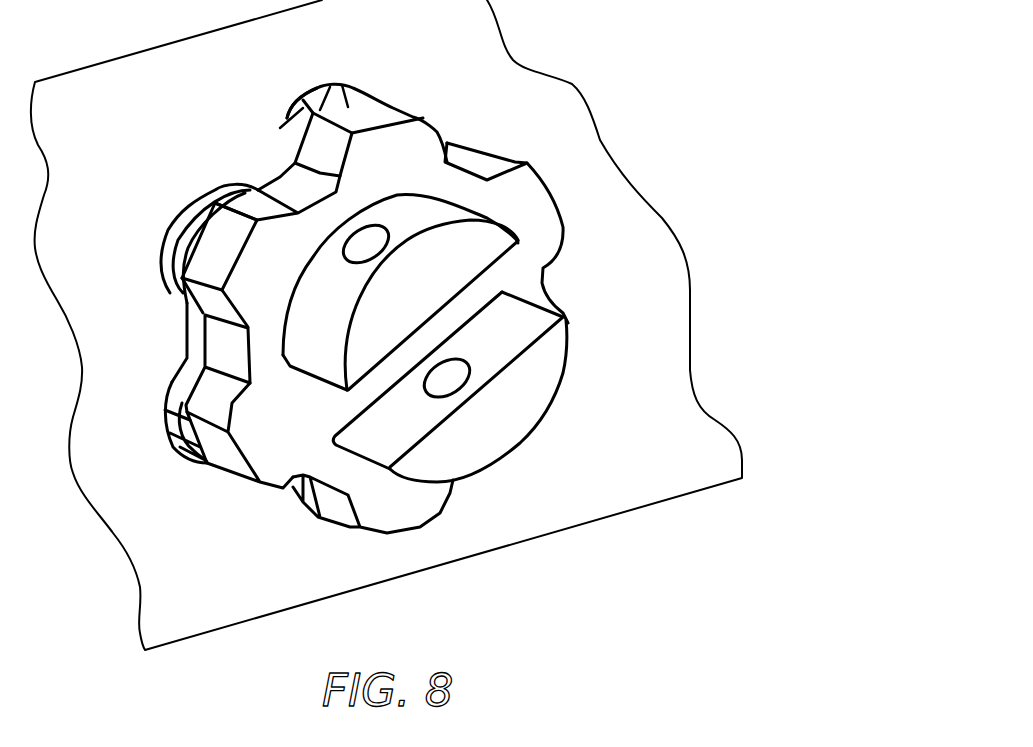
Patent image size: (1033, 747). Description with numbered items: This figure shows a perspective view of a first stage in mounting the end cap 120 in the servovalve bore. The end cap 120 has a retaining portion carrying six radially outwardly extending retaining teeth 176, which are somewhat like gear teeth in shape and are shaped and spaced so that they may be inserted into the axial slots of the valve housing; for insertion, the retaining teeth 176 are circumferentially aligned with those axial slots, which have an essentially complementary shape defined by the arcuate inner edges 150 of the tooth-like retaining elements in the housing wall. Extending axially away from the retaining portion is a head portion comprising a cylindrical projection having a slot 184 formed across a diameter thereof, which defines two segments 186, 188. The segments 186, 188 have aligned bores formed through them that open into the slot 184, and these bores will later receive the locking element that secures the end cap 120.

The end cap 120 is at (568, 145).
The arcuate radially inner edge 150 is at (323, 95).
The retaining teeth 176 is at (270, 230).
The slot 184 is at (530, 303).
The segment 186 is at (510, 438).
The segment 188 is at (505, 256).